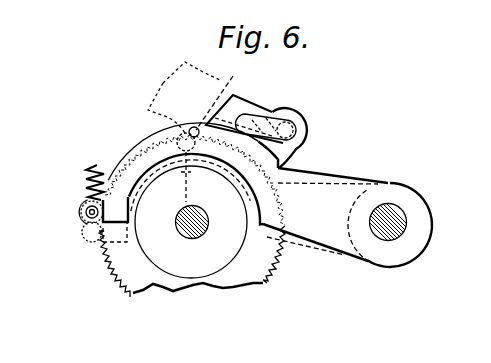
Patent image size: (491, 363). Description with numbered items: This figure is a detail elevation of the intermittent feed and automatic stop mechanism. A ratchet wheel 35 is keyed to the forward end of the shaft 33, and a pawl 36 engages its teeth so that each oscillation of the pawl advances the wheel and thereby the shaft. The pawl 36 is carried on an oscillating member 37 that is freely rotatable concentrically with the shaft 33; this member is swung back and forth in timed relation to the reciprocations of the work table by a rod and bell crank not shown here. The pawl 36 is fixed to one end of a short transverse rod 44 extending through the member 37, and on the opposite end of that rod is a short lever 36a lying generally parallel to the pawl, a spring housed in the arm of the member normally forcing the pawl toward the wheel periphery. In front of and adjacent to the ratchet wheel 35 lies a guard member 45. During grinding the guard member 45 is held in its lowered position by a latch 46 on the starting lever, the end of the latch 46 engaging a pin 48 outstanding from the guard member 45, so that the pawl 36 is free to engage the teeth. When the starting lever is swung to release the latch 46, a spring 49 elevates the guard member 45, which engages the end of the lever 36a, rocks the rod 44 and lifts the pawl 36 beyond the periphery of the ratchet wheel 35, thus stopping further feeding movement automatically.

The shaft 33 is at (197, 238).
The ratchet wheel 35 is at (110, 267).
The pawl 36 is at (236, 96).
The short lever 36a is at (250, 114).
The oscillating member 37 is at (213, 257).
The transverse rod 44 is at (297, 124).
The guard member 45 is at (283, 166).
The latch 46 is at (163, 83).
The pin 48 is at (199, 140).
The spring 49 is at (87, 193).